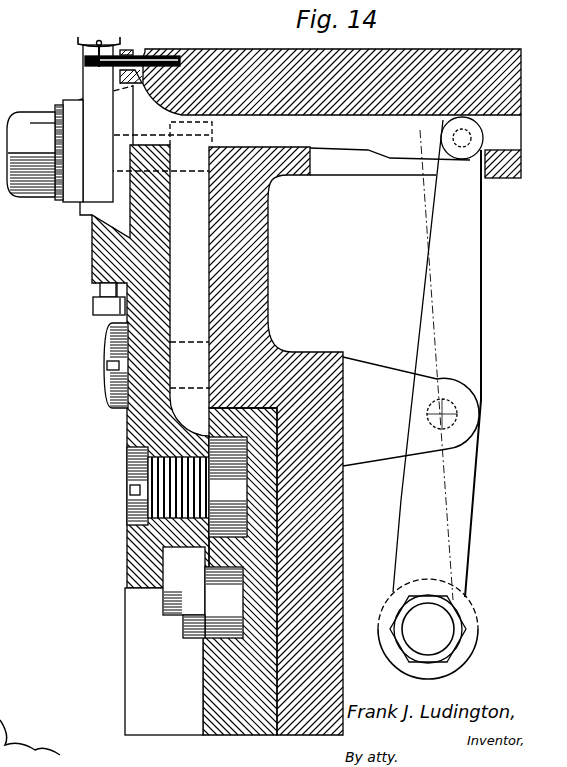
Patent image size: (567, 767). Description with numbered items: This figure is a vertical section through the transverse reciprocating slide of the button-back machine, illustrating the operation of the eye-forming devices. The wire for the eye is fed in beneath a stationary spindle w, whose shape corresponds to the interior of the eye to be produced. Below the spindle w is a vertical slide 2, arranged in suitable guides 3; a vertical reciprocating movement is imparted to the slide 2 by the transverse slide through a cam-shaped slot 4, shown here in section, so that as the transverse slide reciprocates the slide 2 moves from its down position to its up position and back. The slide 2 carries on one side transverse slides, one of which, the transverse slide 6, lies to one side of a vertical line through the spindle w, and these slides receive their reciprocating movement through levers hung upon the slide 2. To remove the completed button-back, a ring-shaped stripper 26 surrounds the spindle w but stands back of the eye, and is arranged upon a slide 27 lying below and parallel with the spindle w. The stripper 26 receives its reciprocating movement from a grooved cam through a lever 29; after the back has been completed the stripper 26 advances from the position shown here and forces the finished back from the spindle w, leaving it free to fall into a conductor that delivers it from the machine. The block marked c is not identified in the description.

The vertical slide 2 is at (211, 440).
The guides 3 is at (164, 661).
The cam-shaped slot 4 is at (246, 487).
The transverse slide 6 is at (64, 130).
The ring-shaped stripper 26 is at (110, 56).
The slide 27 is at (230, 145).
The lever 29 is at (420, 509).
The block c is at (240, 571).
The spindle w is at (84, 62).